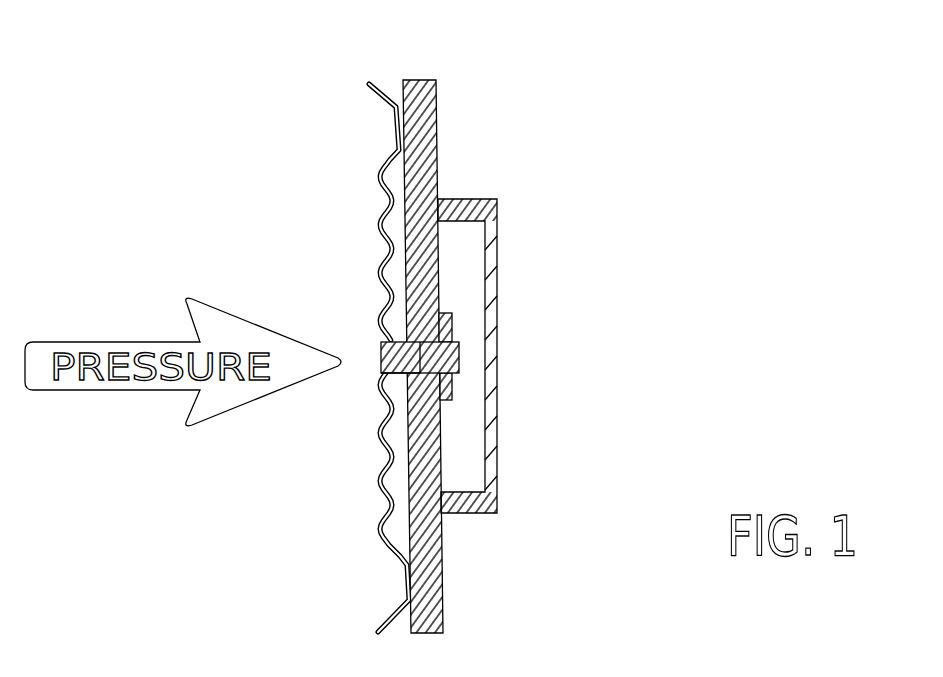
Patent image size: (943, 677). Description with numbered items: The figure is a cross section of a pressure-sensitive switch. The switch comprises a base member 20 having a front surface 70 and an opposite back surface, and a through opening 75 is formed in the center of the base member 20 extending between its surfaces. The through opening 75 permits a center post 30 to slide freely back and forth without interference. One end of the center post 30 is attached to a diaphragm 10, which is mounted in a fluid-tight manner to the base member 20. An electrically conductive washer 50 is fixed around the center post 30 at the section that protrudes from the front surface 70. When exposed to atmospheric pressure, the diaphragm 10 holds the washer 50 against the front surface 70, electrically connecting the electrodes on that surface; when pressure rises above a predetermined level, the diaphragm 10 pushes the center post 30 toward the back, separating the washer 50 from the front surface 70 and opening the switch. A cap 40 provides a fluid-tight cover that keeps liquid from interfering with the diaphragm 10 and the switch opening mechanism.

The diaphragm 10 is at (384, 163).
The base member 20 is at (420, 80).
The center post 30 is at (459, 343).
The cap 40 is at (497, 378).
The electrically conductive washer 50 is at (452, 393).
The front surface 70 is at (438, 222).
The through opening 75 is at (382, 376).